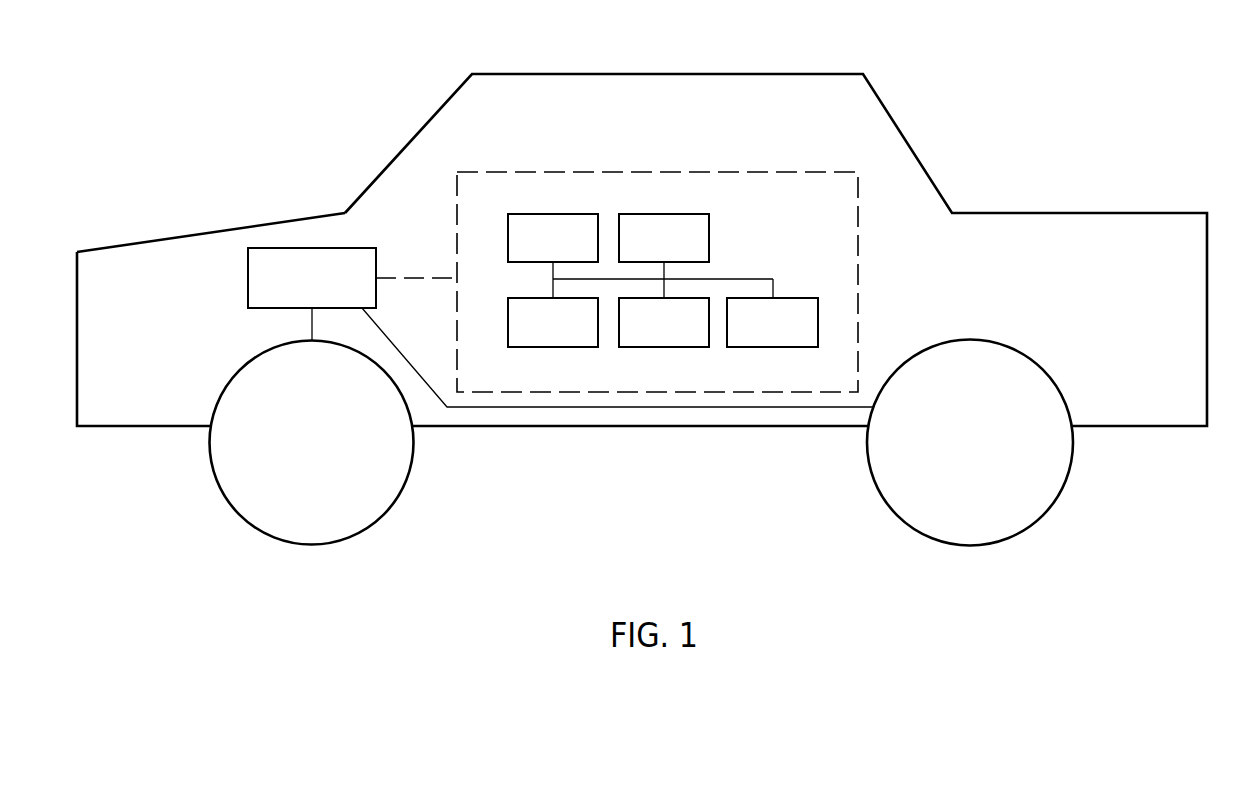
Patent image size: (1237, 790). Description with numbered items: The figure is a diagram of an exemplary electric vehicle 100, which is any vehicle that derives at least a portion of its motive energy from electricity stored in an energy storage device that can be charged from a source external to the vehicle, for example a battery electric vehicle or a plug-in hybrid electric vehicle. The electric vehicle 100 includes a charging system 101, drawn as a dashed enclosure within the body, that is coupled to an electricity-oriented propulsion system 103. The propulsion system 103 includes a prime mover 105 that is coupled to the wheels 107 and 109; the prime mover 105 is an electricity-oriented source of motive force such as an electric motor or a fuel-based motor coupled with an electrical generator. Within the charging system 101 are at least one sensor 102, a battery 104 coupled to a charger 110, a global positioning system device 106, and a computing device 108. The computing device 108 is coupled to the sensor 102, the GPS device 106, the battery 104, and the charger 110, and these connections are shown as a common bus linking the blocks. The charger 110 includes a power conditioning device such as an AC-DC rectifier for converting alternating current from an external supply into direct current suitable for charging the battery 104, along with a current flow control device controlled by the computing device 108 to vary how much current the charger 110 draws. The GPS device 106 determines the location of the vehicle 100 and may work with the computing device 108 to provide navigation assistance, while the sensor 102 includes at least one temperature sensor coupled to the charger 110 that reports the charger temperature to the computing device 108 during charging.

The electric vehicle 100 is at (207, 190).
The charging system 101 is at (526, 170).
The sensor 102 is at (790, 336).
The propulsion system 103 is at (210, 293).
The battery 104 is at (682, 336).
The prime mover 105 is at (329, 292).
The global positioning system device 106 is at (571, 336).
The wheel 107 is at (329, 456).
The computing device 108 is at (571, 252).
The wheel 109 is at (987, 456).
The charger 110 is at (682, 252).